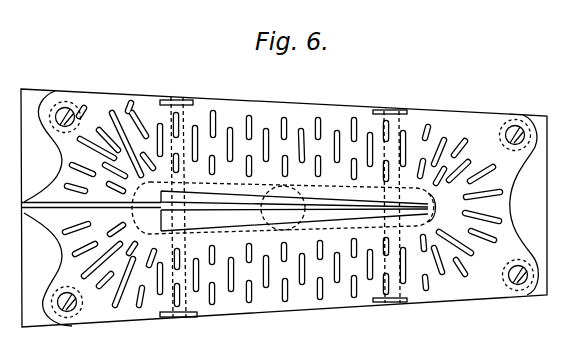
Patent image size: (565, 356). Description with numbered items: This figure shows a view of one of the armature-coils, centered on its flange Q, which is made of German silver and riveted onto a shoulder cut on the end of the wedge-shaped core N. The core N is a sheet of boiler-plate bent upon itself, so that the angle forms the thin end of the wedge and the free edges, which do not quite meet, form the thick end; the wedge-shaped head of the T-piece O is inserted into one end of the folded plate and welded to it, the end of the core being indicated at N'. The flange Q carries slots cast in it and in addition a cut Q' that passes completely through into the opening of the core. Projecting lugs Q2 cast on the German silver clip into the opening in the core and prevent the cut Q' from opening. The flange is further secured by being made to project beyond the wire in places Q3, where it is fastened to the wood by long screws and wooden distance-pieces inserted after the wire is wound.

The flange Q is at (284, 208).
The cut Q' is at (91, 213).
The projecting lugs Q2 is at (283, 208).
The projecting places of flange Q3 is at (294, 211).
The wedge-shaped core N is at (294, 210).
The rounded end of arm N' is at (421, 207).
The T-piece O is at (283, 208).